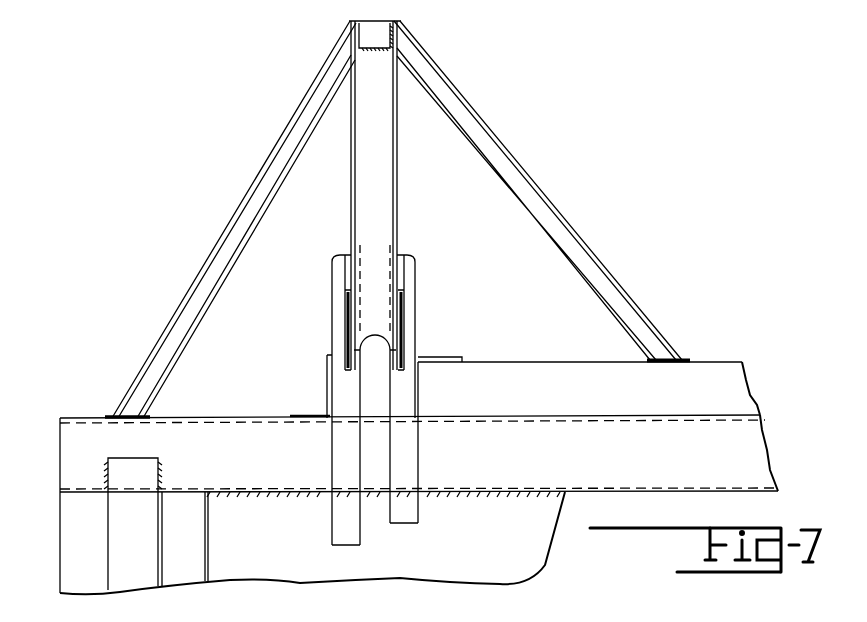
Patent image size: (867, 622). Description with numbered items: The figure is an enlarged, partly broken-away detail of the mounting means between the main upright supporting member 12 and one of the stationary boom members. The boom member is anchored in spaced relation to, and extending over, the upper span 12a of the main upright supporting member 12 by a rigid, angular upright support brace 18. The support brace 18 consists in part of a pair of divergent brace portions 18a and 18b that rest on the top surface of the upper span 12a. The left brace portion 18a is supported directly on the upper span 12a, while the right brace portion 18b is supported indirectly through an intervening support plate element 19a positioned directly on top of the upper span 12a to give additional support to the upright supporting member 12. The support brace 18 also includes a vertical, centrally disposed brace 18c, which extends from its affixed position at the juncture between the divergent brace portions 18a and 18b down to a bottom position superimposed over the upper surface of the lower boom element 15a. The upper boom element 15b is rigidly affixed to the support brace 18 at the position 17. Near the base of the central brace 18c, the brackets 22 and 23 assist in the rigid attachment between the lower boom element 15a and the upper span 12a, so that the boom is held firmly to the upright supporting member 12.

The main upright supporting member 12 is at (70, 548).
The upper span 12a is at (236, 428).
The lower boom element 15a is at (345, 538).
The upper boom element 15b is at (375, 456).
The affixing position 17 is at (376, 21).
The upright support brace 18 is at (490, 124).
The left brace portion 18a is at (232, 214).
The right brace portion 18b is at (548, 196).
The vertical central brace 18c is at (380, 170).
The support plate element 19a is at (582, 374).
The bracket 22 is at (330, 368).
The bracket 23 is at (418, 338).